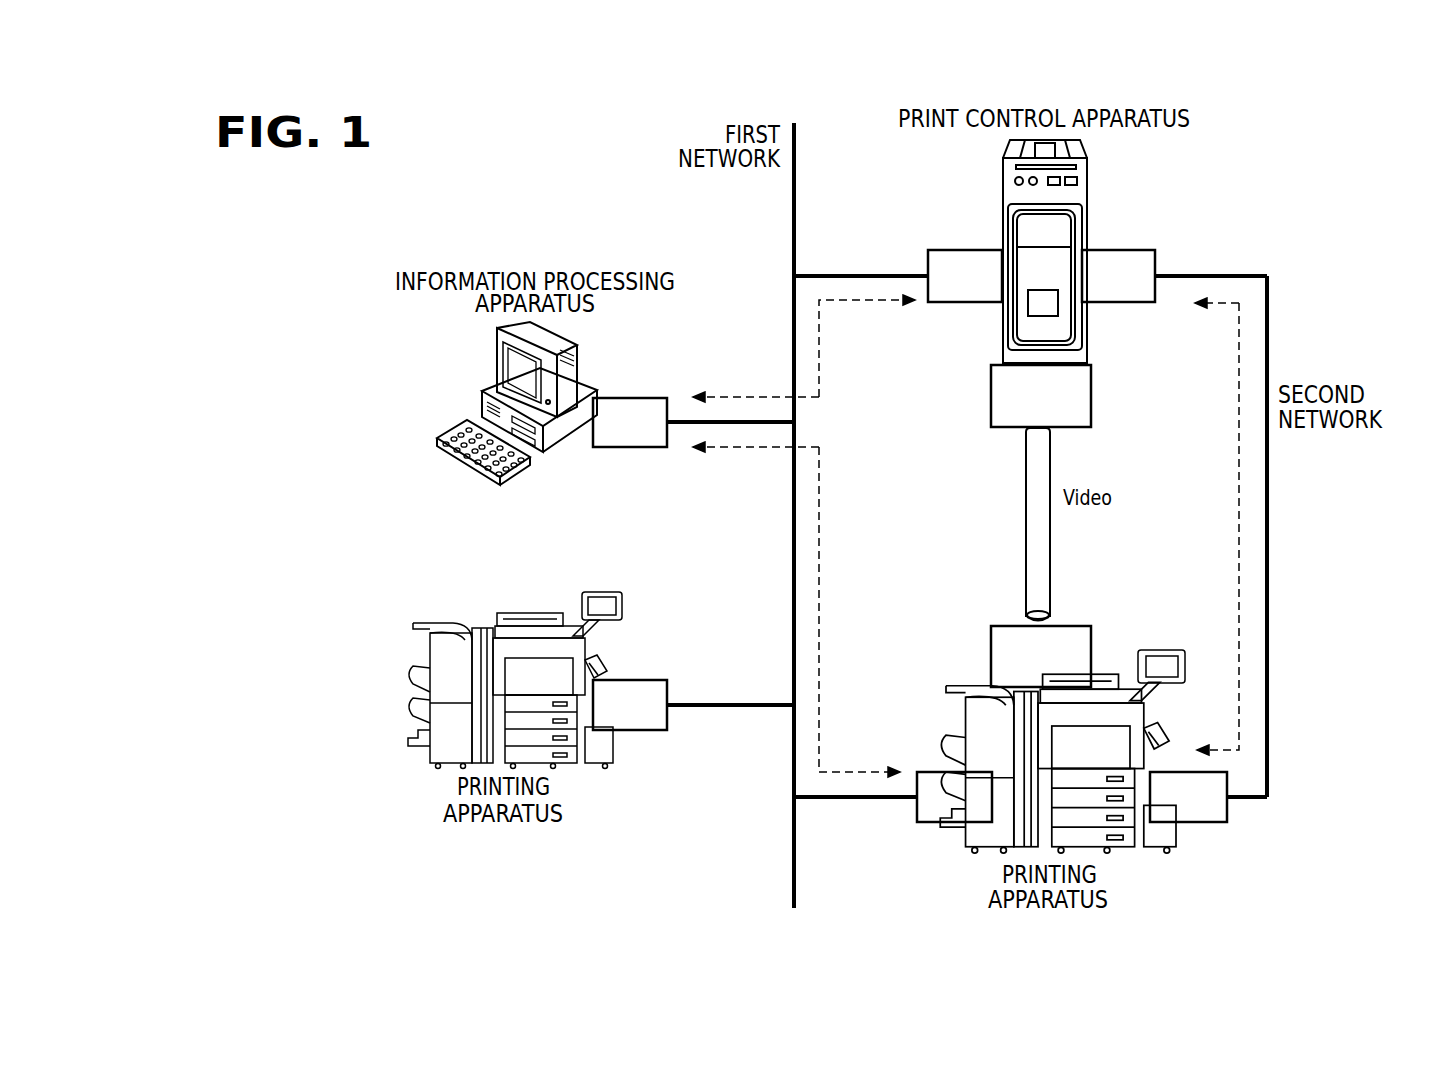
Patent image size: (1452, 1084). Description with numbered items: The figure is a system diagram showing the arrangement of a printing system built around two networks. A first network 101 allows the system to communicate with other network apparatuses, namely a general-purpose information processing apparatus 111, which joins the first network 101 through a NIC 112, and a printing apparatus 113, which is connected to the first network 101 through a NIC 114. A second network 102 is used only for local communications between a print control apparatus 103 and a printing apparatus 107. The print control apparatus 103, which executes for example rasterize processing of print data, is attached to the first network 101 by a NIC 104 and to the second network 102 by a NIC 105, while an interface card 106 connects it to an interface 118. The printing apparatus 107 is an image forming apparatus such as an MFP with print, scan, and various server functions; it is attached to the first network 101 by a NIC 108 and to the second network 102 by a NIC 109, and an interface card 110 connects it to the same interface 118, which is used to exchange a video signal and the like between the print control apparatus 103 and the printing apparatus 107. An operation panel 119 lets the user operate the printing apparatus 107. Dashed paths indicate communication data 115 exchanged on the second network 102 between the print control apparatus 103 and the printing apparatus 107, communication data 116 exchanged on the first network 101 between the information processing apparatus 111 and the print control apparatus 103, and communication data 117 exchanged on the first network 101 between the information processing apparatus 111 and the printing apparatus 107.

The first network 101 is at (794, 226).
The second network 102 is at (1268, 327).
The print control apparatus 103 is at (1087, 197).
The NIC 104 is at (958, 250).
The NIC 105 is at (1125, 302).
The interface card 106 is at (991, 393).
The printing apparatus 107 is at (1128, 850).
The NIC 108 is at (925, 822).
The NIC 109 is at (1205, 822).
The interface card 110 is at (991, 649).
The information processing apparatus 111 is at (583, 355).
The NIC 112 is at (630, 447).
The printing apparatus 113 is at (589, 752).
The NIC 114 is at (636, 731).
The communication data 115 is at (1239, 460).
The communication data 116 is at (820, 345).
The communication data 117 is at (820, 495).
The interface 118 is at (1040, 553).
The operation panel 119 is at (1158, 652).